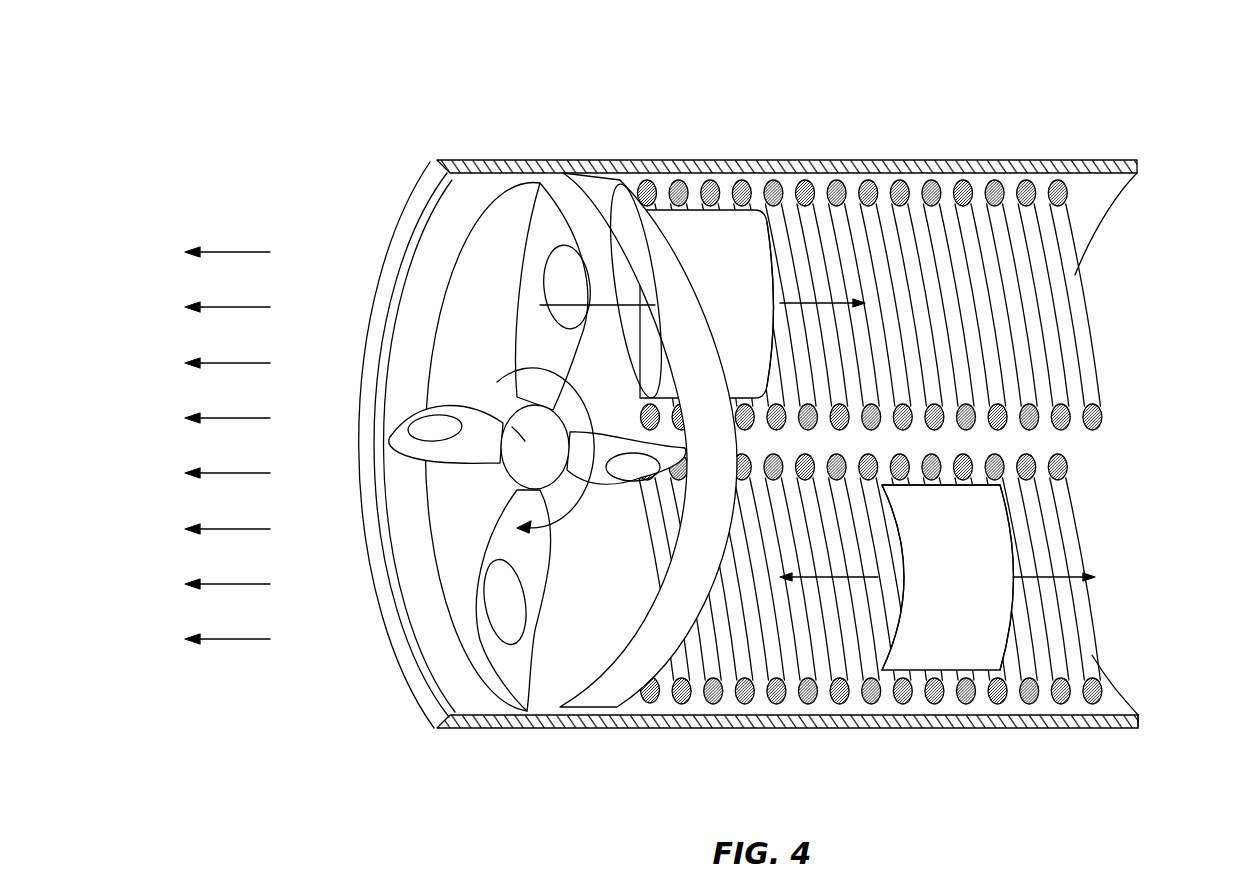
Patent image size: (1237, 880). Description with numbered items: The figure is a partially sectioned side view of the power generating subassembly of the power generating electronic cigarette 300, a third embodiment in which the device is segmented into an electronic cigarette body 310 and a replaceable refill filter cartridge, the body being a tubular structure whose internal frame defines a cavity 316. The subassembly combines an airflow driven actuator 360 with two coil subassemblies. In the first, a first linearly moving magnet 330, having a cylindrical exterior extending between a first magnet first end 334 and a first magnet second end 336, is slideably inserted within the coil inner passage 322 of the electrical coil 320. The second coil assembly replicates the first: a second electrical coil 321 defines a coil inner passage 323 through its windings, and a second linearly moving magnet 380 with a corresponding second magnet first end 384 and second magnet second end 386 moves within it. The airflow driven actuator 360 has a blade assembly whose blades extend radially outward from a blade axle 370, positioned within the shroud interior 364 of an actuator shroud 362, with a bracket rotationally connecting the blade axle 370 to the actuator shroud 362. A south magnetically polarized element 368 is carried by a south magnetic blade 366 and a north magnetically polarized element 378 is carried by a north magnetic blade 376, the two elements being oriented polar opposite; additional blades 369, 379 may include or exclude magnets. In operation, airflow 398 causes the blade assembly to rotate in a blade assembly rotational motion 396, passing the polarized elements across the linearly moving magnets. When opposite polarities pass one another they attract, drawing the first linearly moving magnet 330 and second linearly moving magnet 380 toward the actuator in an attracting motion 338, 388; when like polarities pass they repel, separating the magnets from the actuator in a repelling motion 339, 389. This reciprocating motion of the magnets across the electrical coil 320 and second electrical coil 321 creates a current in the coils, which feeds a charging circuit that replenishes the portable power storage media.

The power generating electronic cigarette 300 is at (312, 130).
The electronic cigarette body 310 is at (560, 720).
The cavity 316 is at (1113, 690).
The electrical coil 320 is at (1093, 630).
The second electrical coil 321 is at (1082, 283).
The coil inner passage 322 is at (1076, 544).
The coil inner passage 323 is at (1058, 371).
The first linearly moving magnet 330 is at (950, 660).
The first magnet first end 334 is at (880, 628).
The first magnet second end 336 is at (1012, 625).
The attracting motion 338 is at (852, 600).
The repelling motion 339 is at (1050, 577).
The airflow driven actuator 360 is at (484, 446).
The actuator shroud 362 is at (422, 624).
The shroud interior 364 is at (408, 377).
The south magnetic blade 366 is at (485, 540).
The south magnetically polarized element 368 is at (482, 568).
The additional blade 369 is at (428, 468).
The blade axle 370 is at (388, 419).
The north magnetic blade 376 is at (515, 350).
The north magnetically polarized element 378 is at (540, 305).
The additional blade 379 is at (603, 483).
The second linearly moving magnet 380 is at (721, 230).
The second magnet first end 384 is at (632, 235).
The second magnet second end 386 is at (785, 250).
The attracting motion 388 is at (622, 185).
The repelling motion 389 is at (812, 300).
The blade assembly rotational motion 396 is at (510, 493).
The airflow 398 is at (229, 250).